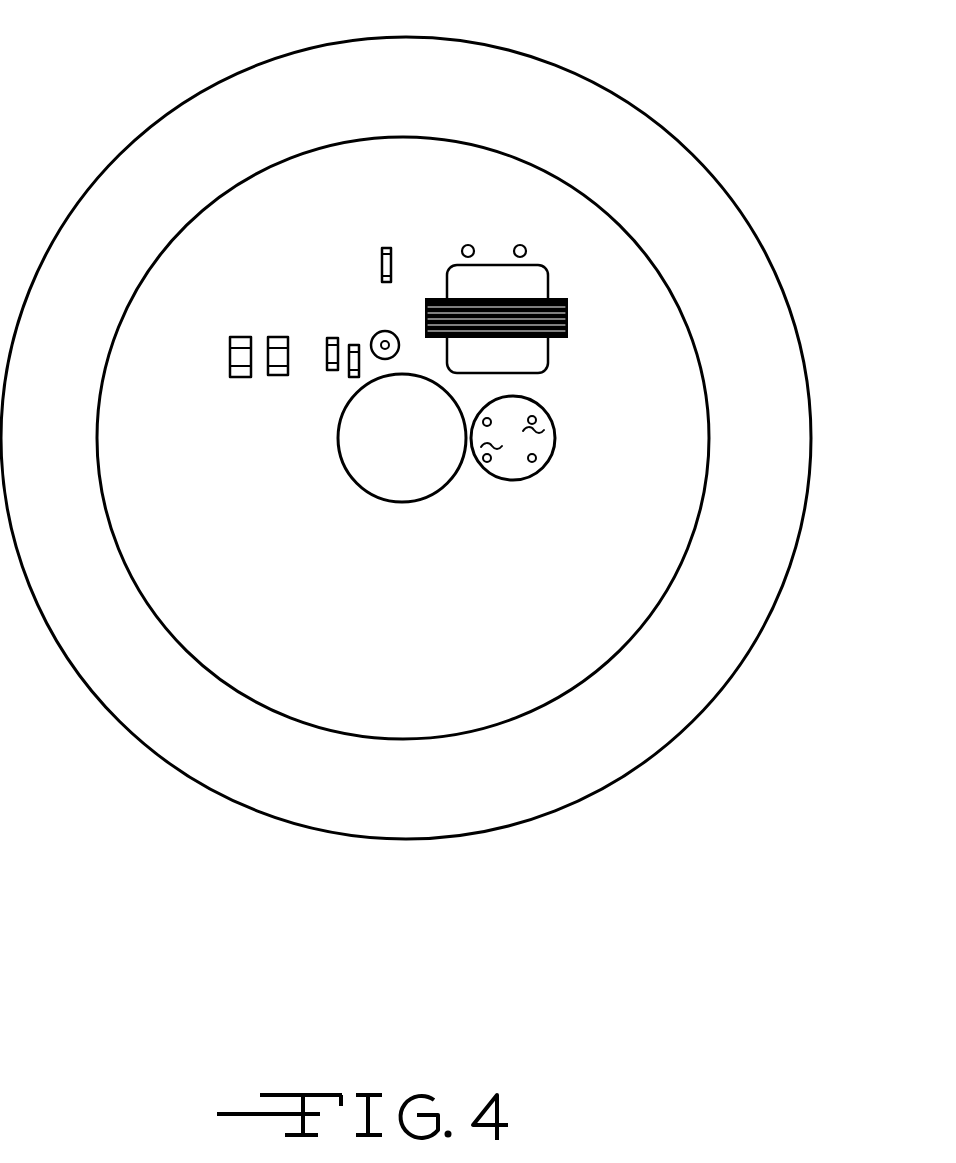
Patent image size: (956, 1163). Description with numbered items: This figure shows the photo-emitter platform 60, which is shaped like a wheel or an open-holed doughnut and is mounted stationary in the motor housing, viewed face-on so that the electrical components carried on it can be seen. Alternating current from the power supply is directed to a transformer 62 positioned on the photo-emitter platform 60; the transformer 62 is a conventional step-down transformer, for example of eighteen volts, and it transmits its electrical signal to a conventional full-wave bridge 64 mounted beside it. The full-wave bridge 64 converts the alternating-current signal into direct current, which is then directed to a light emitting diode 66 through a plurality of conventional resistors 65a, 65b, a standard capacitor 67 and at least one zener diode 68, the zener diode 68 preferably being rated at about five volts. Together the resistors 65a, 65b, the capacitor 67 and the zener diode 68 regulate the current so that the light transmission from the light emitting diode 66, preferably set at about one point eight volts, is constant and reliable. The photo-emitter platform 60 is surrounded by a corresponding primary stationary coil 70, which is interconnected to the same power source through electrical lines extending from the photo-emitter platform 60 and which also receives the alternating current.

The photo-emitter platform 60 is at (672, 422).
The primary stationary coil 70 is at (772, 535).
The transformer 62 is at (499, 264).
The full-wave bridge 64 is at (547, 410).
The resistor 65a is at (328, 338).
The resistor 65b is at (350, 345).
The light emitting diode 66 is at (378, 334).
The capacitor 67 is at (270, 337).
The zener diode 68 is at (387, 250).